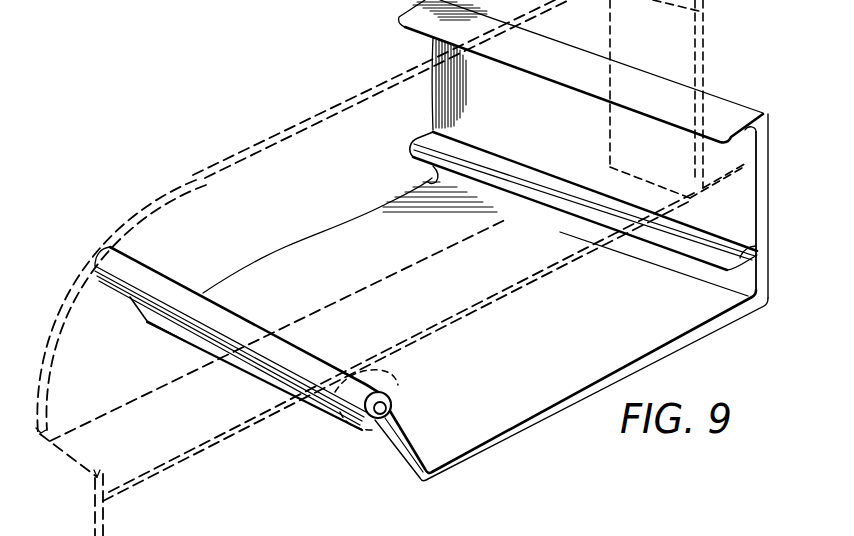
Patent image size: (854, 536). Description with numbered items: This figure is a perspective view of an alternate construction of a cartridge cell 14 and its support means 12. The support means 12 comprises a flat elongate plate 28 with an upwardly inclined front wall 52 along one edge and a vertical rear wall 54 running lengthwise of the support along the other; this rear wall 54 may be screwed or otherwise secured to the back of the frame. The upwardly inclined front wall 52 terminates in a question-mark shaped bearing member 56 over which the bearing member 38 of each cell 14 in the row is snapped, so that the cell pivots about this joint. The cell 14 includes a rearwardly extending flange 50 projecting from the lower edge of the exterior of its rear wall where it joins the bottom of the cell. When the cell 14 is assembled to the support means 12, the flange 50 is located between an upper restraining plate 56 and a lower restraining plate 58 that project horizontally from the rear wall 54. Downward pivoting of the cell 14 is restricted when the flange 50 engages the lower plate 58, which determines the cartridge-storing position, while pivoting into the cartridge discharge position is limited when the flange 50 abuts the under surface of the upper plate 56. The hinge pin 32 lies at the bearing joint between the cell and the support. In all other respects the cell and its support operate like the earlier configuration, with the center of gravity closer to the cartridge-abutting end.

The support means 12 is at (551, 428).
The cell 14 is at (320, 110).
The flat elongate plate 28 is at (560, 349).
The hinge pin 32 is at (378, 414).
The bearing member 38 is at (388, 380).
The rearwardly extending flange 50 is at (727, 178).
The upwardly inclined front wall 52 is at (418, 451).
The vertical rear wall 54 is at (770, 215).
The question-mark shaped bearing member 56 is at (770, 133).
The lower restraining plate 58 is at (741, 257).